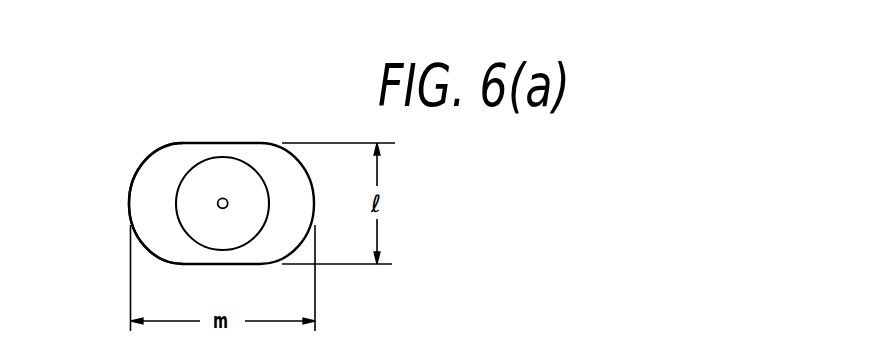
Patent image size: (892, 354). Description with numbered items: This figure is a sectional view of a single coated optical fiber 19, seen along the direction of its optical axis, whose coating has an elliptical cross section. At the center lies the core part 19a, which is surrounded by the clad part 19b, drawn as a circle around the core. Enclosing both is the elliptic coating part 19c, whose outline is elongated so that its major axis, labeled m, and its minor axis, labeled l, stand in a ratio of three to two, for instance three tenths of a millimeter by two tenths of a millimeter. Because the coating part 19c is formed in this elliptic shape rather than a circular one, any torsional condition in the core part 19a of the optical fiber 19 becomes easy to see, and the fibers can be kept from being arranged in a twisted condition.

The optical fiber 19 is at (237, 143).
The core part 19a is at (223, 197).
The clad part 19b is at (253, 182).
The elliptic coating part 19c is at (155, 170).